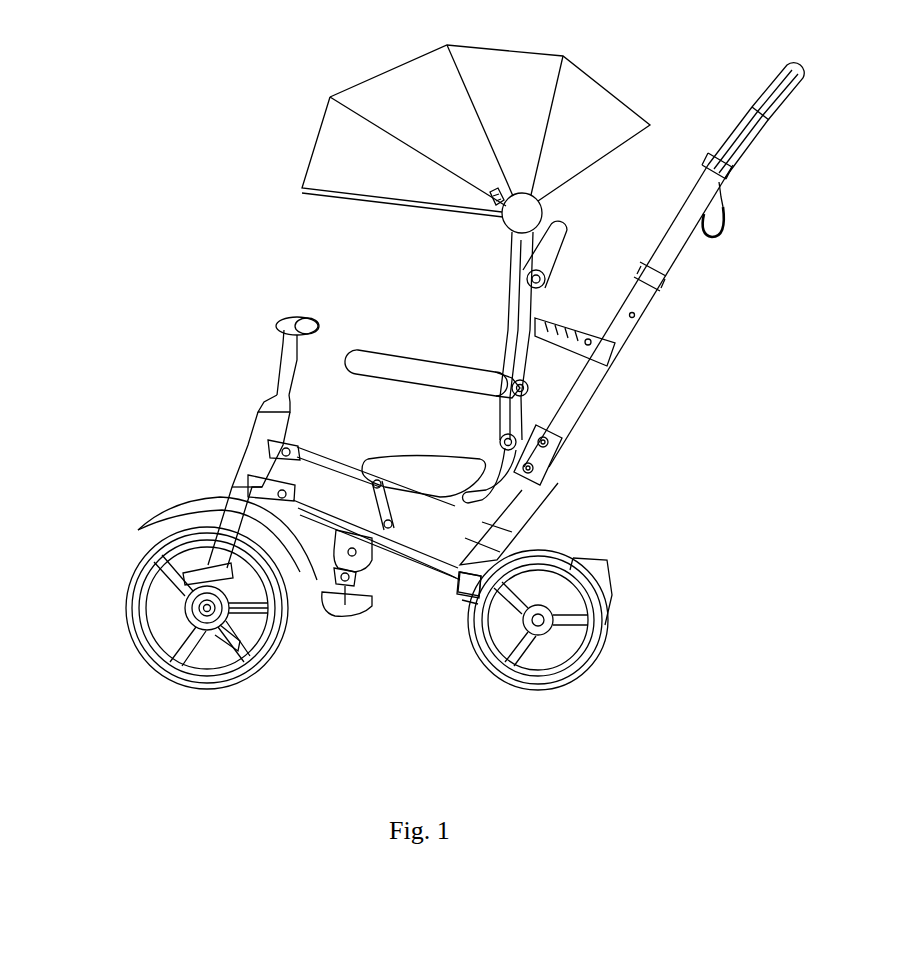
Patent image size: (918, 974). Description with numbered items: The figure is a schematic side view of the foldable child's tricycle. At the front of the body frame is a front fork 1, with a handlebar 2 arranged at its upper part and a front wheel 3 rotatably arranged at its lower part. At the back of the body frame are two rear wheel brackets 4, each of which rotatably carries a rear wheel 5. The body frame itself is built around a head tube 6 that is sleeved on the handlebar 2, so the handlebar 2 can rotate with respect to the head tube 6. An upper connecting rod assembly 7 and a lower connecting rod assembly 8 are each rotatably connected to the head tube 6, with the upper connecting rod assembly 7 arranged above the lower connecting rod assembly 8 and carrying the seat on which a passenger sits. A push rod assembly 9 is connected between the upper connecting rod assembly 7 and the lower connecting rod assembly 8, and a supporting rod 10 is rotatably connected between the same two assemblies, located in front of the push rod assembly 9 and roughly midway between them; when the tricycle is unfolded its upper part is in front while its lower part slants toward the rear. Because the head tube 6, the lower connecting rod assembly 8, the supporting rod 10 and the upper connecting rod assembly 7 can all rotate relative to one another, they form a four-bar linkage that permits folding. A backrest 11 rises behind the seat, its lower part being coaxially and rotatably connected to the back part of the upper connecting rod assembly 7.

The front fork 1 is at (225, 540).
The handlebar 2 is at (290, 370).
The front wheel 3 is at (187, 630).
The rear wheel bracket 4 is at (477, 587).
The rear wheel 5 is at (583, 628).
The head tube 6 is at (252, 457).
The upper connecting rod assembly 7 is at (347, 468).
The lower connecting rod assembly 8 is at (410, 557).
The push rod assembly 9 is at (632, 315).
The supporting rod 10 is at (385, 510).
The backrest 11 is at (527, 353).